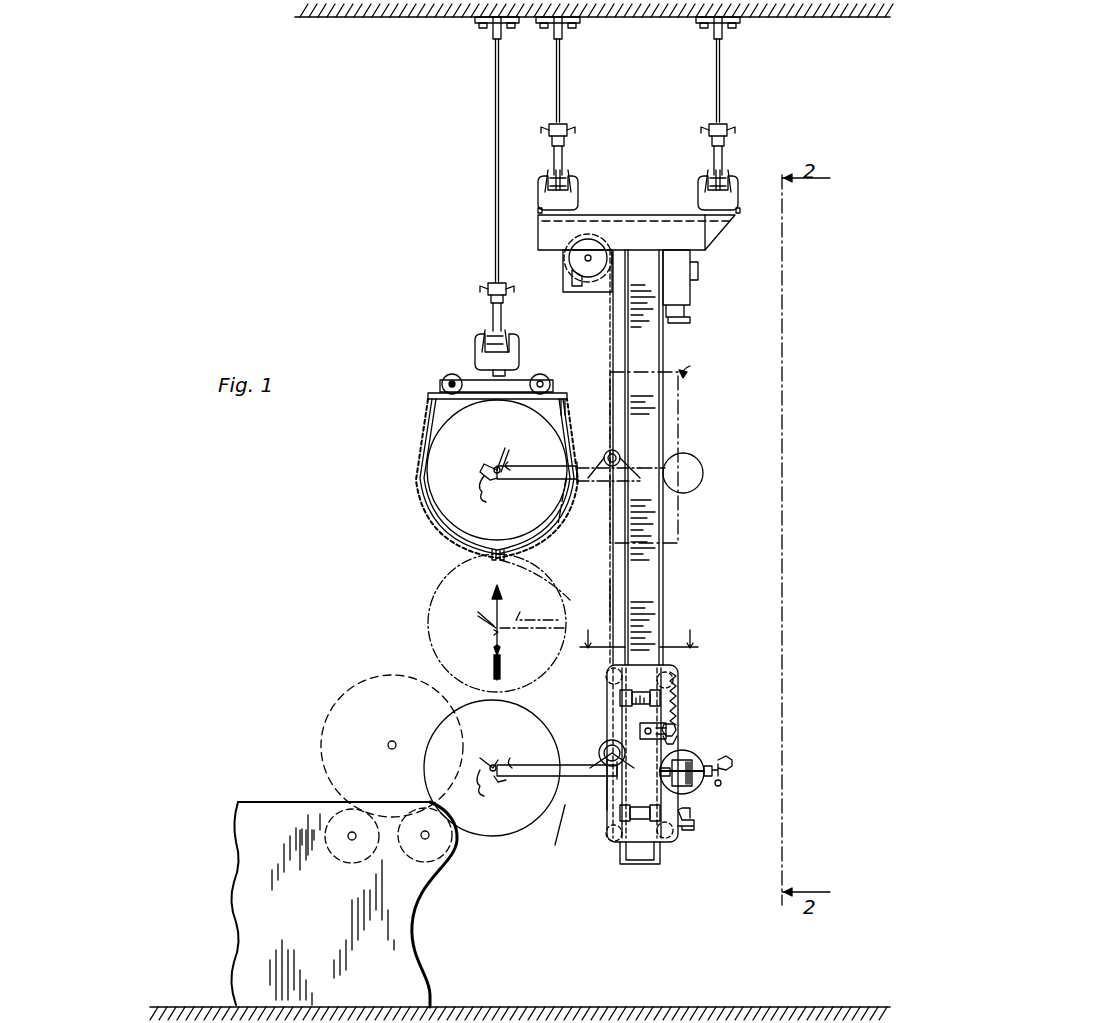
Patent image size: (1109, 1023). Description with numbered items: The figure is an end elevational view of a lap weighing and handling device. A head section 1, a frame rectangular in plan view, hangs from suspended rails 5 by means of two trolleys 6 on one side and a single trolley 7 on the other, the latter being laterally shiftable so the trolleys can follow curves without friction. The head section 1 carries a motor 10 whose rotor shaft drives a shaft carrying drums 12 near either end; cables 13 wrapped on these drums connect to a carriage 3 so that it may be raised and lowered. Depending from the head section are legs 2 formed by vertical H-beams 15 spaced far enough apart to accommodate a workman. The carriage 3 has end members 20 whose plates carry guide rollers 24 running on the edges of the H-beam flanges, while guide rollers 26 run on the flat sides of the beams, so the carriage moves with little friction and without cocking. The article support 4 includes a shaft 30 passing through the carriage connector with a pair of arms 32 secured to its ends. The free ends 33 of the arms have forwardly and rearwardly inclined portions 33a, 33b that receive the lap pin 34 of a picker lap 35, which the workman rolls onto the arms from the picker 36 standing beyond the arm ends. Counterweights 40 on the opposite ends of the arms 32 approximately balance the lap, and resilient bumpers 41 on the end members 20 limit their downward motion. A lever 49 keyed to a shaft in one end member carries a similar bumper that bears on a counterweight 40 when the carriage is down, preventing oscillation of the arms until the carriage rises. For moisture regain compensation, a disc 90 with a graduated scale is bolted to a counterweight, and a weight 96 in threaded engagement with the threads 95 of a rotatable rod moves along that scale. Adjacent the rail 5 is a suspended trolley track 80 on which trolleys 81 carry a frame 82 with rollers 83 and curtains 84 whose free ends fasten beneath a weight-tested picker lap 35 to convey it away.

The head section 1 is at (624, 225).
The depending legs 2 is at (654, 343).
The carriage 3 is at (684, 373).
The article support 4 is at (537, 469).
The suspended rails 5 is at (578, 202).
The trolleys 6 is at (542, 213).
The trolley 7 is at (736, 205).
The motor 10 is at (692, 271).
The drums 12 is at (568, 267).
The cables 13 is at (606, 341).
The vertical H-beams 15 is at (662, 587).
The end members 20 is at (612, 795).
The guide rollers 24 is at (622, 686).
The guide rollers 26 is at (608, 669).
The shaft 30 is at (602, 749).
The arms 32 is at (592, 647).
The ends 33 is at (488, 633).
The forwardly inclined portion 33a is at (400, 637).
The rearwardly inclined portion 33b is at (518, 455).
The lap pin 34 is at (504, 458).
The picker lap 35 is at (450, 487).
The picker 36 is at (276, 797).
The counterweights 40 is at (700, 457).
The resilient bumpers 41 is at (694, 815).
The lever 49 is at (672, 729).
The suspended trolley track 80 is at (490, 357).
The trolleys 81 is at (490, 327).
The frame 82 is at (514, 375).
The rollers 83 is at (444, 373).
The curtains 84 is at (556, 405).
The disc 90 is at (684, 753).
The threads 95 is at (694, 785).
The weight 96 is at (716, 761).